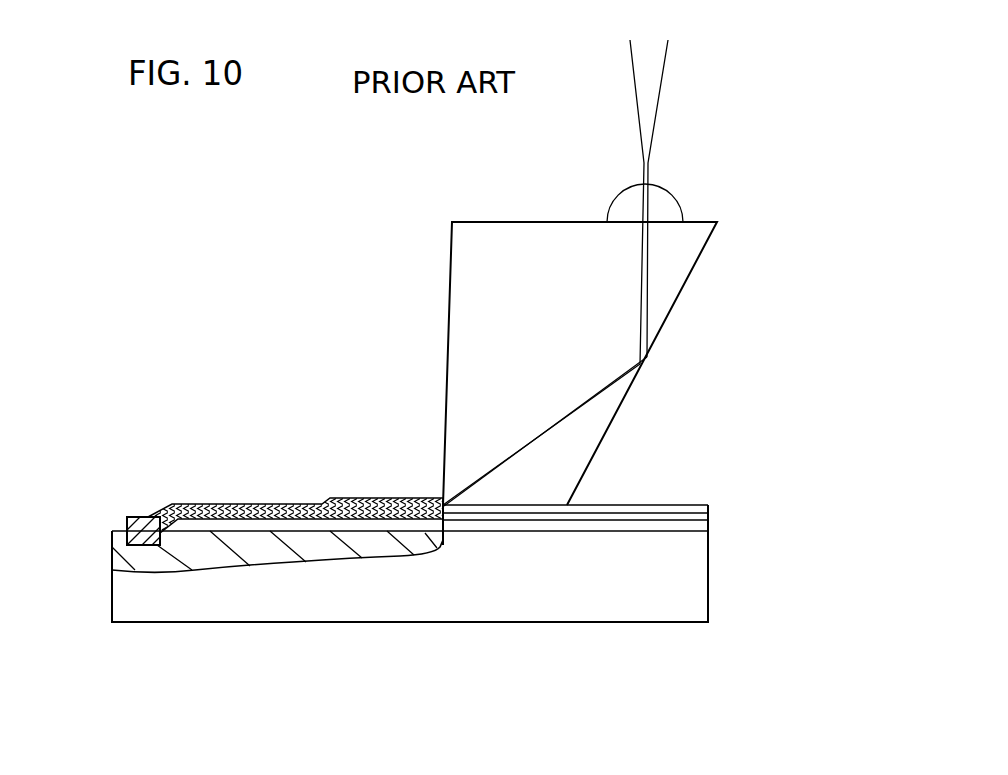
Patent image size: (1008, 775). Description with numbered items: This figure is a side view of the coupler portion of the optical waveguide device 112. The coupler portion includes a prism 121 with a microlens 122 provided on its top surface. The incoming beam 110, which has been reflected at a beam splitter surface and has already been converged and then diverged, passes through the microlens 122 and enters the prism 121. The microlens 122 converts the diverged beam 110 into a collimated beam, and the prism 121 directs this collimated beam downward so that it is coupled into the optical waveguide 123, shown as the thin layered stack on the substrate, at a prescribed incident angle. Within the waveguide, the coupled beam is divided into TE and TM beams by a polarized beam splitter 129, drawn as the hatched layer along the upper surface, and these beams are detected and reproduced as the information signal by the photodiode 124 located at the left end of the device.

The beam 110 is at (657, 94).
The optical waveguide device 112 is at (682, 459).
The prism 121 is at (675, 267).
The microlens 122 is at (677, 200).
The optical waveguide 123 is at (723, 552).
The photodiode 124 is at (124, 535).
The polarized beam splitter 129 is at (372, 508).